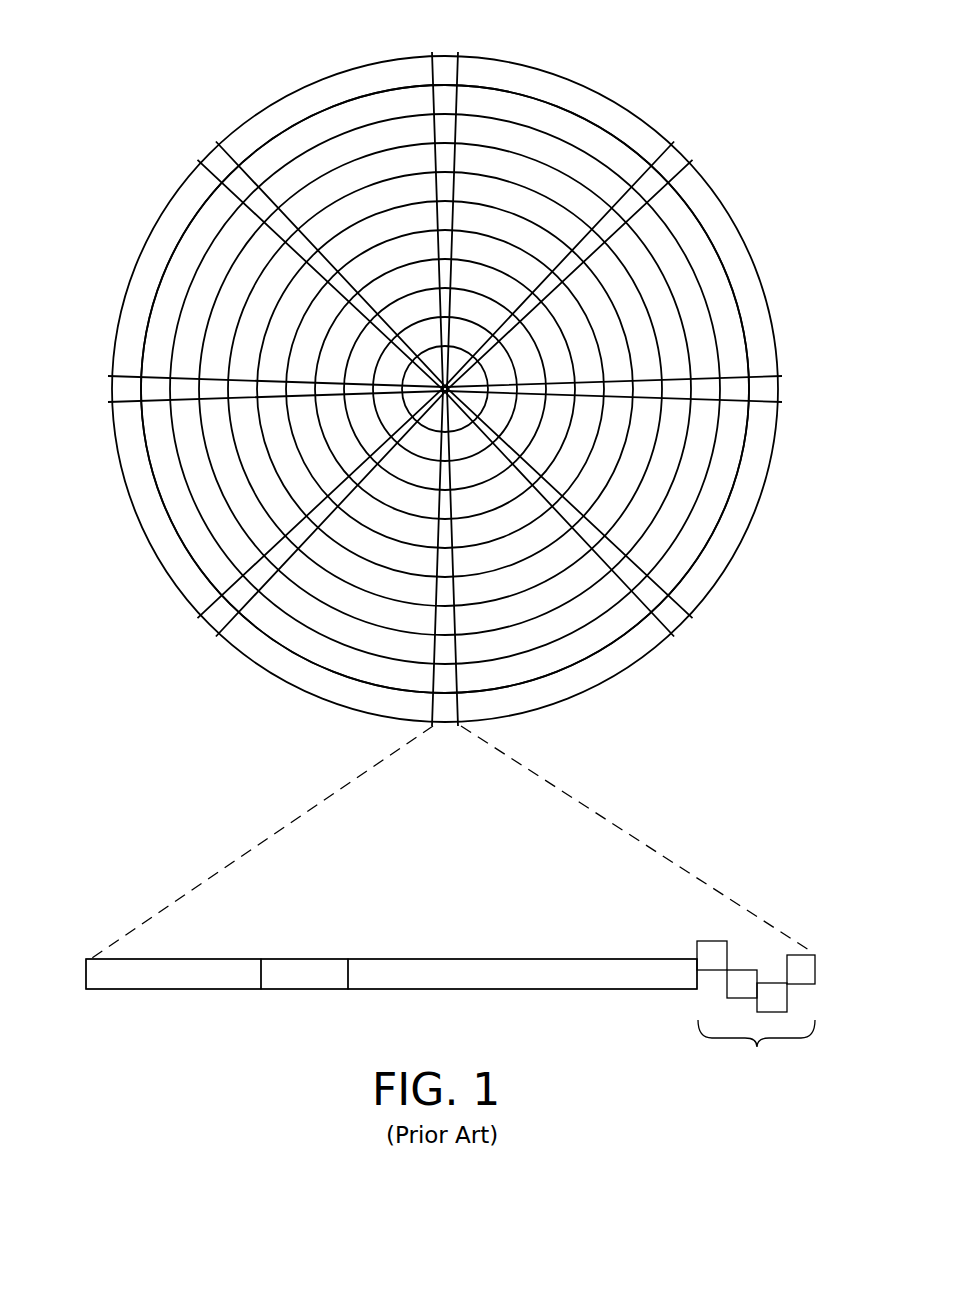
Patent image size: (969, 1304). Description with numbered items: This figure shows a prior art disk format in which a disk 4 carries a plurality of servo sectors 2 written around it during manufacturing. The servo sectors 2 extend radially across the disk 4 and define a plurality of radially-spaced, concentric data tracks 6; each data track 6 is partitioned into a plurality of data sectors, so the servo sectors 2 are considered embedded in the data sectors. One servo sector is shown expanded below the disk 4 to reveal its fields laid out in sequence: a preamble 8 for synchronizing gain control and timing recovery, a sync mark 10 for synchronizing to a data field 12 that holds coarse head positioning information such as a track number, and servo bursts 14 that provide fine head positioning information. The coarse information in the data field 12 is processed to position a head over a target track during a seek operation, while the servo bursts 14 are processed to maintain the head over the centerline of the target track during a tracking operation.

The disk 4 is at (192, 60).
The servo sectors 2 is at (444, 404).
The data track 6 is at (580, 105).
The preamble 8 is at (153, 990).
The sync mark 10 is at (303, 990).
The data field 12 is at (510, 990).
The servo bursts 14 is at (677, 919).